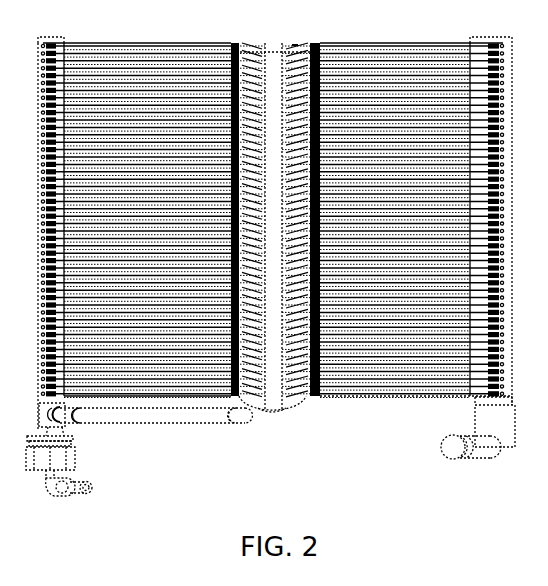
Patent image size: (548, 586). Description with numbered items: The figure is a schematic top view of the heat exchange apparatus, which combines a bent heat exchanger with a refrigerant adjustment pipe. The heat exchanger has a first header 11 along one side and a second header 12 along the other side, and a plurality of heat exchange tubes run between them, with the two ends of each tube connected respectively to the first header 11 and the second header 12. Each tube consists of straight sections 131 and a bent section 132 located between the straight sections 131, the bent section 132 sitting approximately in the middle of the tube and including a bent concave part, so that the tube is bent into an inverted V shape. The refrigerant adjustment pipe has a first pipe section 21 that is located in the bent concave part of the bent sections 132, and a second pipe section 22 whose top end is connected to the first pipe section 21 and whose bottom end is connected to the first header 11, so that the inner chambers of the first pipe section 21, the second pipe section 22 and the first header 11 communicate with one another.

The first header 11 is at (46, 345).
The second header 12 is at (507, 368).
The straight section 131 is at (104, 44).
The bent section 132 is at (302, 403).
The first pipe section 21 is at (277, 108).
The second pipe section 22 is at (130, 418).